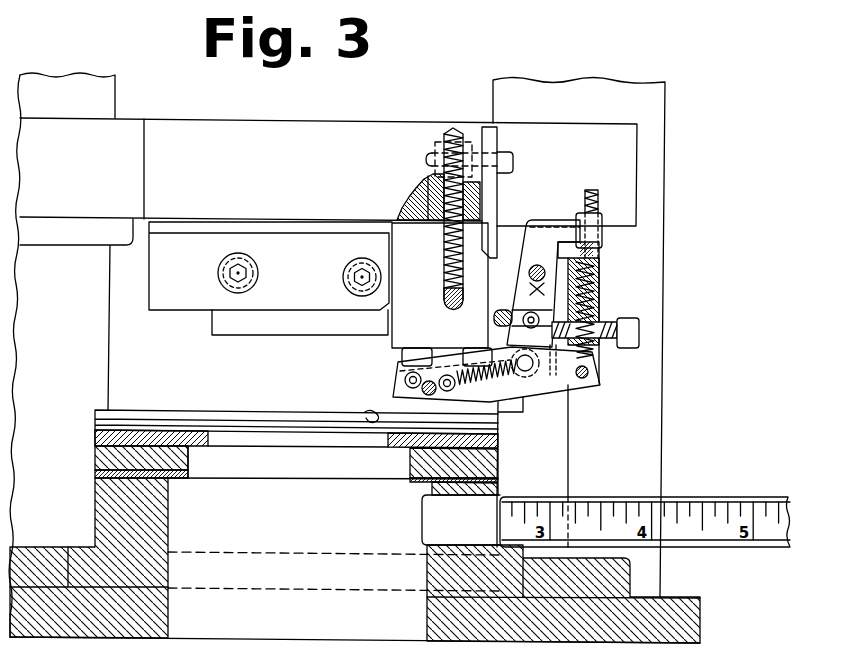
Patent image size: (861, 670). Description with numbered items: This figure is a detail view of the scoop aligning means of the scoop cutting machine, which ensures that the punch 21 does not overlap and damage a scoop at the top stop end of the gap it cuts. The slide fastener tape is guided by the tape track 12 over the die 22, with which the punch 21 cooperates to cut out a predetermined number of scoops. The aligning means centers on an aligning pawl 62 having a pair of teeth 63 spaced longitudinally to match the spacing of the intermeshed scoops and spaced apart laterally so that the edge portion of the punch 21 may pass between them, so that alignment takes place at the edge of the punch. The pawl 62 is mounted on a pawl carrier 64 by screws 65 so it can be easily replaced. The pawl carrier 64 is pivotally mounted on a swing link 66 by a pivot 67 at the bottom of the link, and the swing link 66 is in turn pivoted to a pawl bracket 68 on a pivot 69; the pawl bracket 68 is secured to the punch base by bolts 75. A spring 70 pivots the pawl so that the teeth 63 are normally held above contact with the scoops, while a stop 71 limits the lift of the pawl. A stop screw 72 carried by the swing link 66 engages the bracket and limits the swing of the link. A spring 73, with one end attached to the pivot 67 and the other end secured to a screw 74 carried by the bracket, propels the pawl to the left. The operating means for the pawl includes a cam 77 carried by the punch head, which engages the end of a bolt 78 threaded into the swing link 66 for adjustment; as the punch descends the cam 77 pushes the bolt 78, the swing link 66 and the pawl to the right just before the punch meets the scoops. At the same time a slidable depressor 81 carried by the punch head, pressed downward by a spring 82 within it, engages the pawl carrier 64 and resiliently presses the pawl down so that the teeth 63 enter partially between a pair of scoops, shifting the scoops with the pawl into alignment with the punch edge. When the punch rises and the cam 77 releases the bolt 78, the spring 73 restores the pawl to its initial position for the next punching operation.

The tape track 12 is at (210, 409).
The punch 21 is at (250, 335).
The die 22 is at (238, 445).
The aligning pawl 62 is at (383, 410).
The teeth 63 is at (367, 419).
The pawl carrier 64 is at (498, 393).
The screws 65 is at (445, 377).
The swing link 66 is at (523, 290).
The pivot 67 is at (535, 372).
The pawl bracket 68 is at (600, 268).
The pivot 69 is at (530, 275).
The spring 70 is at (600, 291).
The stop 71 is at (590, 372).
The stop screw 72 is at (593, 192).
The spring 73 is at (503, 378).
The screw 74 is at (440, 403).
The bolts 75 is at (420, 350).
The cam 77 is at (498, 197).
The bolt 78 is at (630, 333).
The depressor 81 is at (441, 297).
The spring 82 is at (444, 253).